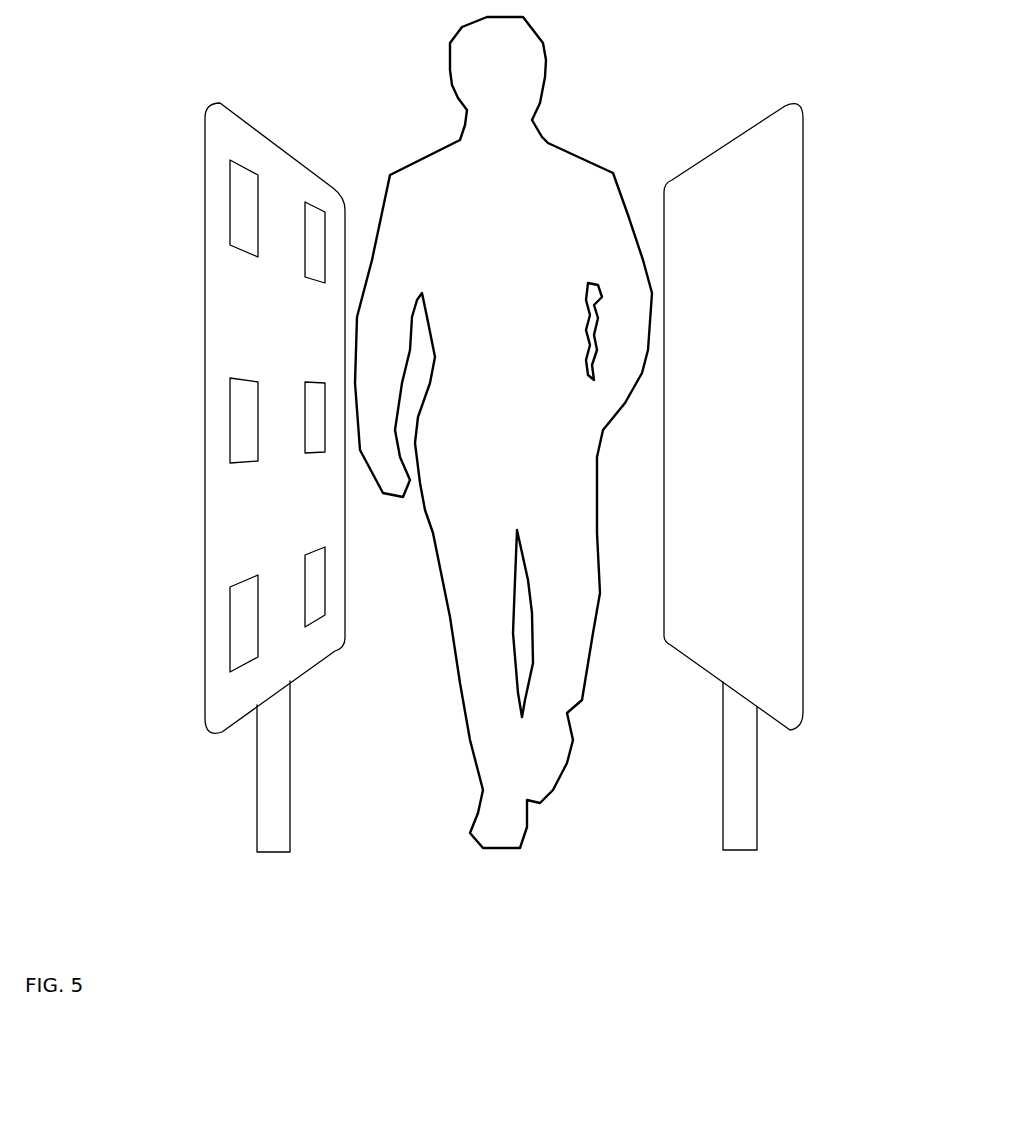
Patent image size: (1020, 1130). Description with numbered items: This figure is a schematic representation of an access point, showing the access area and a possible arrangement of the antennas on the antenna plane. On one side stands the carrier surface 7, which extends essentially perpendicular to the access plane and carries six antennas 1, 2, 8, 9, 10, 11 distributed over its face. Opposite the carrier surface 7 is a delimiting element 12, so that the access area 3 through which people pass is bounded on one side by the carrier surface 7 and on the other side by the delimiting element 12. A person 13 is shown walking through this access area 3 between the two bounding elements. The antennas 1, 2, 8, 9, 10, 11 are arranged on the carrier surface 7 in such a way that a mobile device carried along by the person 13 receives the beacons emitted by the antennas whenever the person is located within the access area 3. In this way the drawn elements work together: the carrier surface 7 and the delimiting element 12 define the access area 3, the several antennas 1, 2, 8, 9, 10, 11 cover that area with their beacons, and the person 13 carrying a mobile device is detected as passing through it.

The antenna 1 is at (243, 193).
The antenna 2 is at (313, 587).
The access area 3 is at (570, 875).
The carrier surface 7 is at (217, 310).
The antenna 8 is at (313, 213).
The antenna 9 is at (243, 623).
The antenna 10 is at (243, 422).
The antenna 11 is at (315, 398).
The delimiting element 12 is at (787, 318).
The person 13 is at (582, 172).